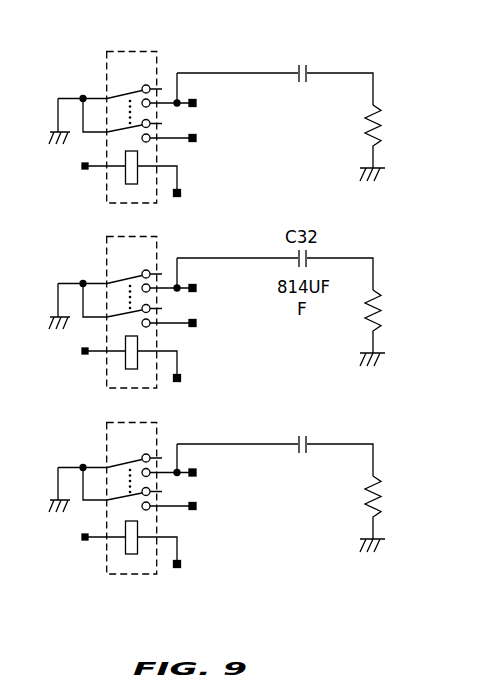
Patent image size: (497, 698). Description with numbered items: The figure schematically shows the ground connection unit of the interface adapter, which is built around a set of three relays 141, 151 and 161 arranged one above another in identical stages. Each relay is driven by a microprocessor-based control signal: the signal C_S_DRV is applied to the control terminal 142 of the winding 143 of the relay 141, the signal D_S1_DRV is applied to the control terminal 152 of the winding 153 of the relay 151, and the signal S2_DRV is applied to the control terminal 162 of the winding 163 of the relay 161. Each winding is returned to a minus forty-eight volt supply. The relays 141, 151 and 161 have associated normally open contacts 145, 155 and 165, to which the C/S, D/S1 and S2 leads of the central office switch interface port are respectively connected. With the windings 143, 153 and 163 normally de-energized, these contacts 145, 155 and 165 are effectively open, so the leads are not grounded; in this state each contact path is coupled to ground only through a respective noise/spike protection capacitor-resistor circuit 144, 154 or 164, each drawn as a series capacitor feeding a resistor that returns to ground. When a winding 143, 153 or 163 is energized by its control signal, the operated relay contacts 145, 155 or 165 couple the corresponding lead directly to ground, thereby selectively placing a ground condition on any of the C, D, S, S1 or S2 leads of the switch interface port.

The relay 141 is at (113, 50).
The control terminal 142 is at (184, 192).
The winding 143 is at (125, 177).
The noise/spike protection capacitor-resistor circuit 144 is at (385, 124).
The normally open contacts 145 is at (152, 108).
The relay 151 is at (105, 313).
The control terminal 152 is at (206, 387).
The winding 153 is at (107, 361).
The noise/spike protection capacitor-resistor circuit 154 is at (396, 328).
The normally open contacts 155 is at (196, 298).
The relay 161 is at (105, 499).
The control terminal 162 is at (202, 572).
The winding 163 is at (107, 546).
The noise/spike protection capacitor-resistor circuit 164 is at (396, 514).
The normally open contacts 165 is at (192, 485).